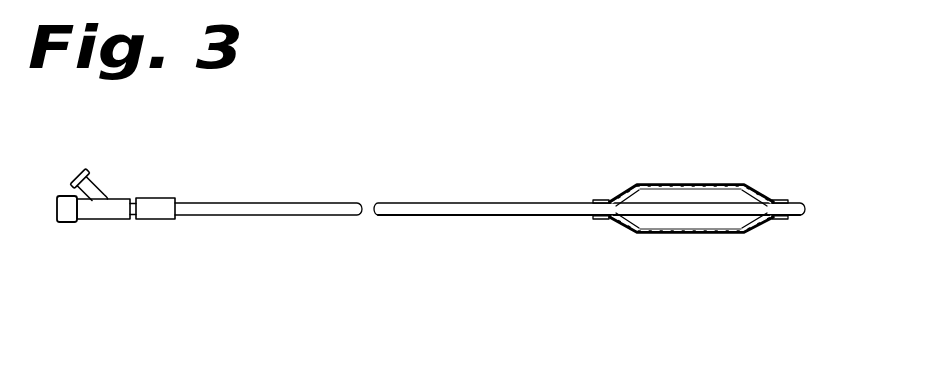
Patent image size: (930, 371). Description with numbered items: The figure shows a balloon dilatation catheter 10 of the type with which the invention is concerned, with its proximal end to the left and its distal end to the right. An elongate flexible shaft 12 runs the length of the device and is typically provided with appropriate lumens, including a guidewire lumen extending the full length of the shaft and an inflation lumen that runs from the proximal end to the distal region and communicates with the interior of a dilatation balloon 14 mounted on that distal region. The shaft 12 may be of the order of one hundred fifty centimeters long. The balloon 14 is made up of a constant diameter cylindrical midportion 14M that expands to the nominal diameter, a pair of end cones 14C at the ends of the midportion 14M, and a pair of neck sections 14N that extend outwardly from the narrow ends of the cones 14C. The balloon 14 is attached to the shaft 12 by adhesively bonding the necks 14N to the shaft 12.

The catheter 10 is at (389, 168).
The elongate flexible shaft 12 is at (543, 208).
The dilatation balloon 14 is at (718, 177).
The end cones 14C is at (623, 196).
The cylindrical midportion 14M is at (677, 184).
The neck sections 14N is at (599, 220).